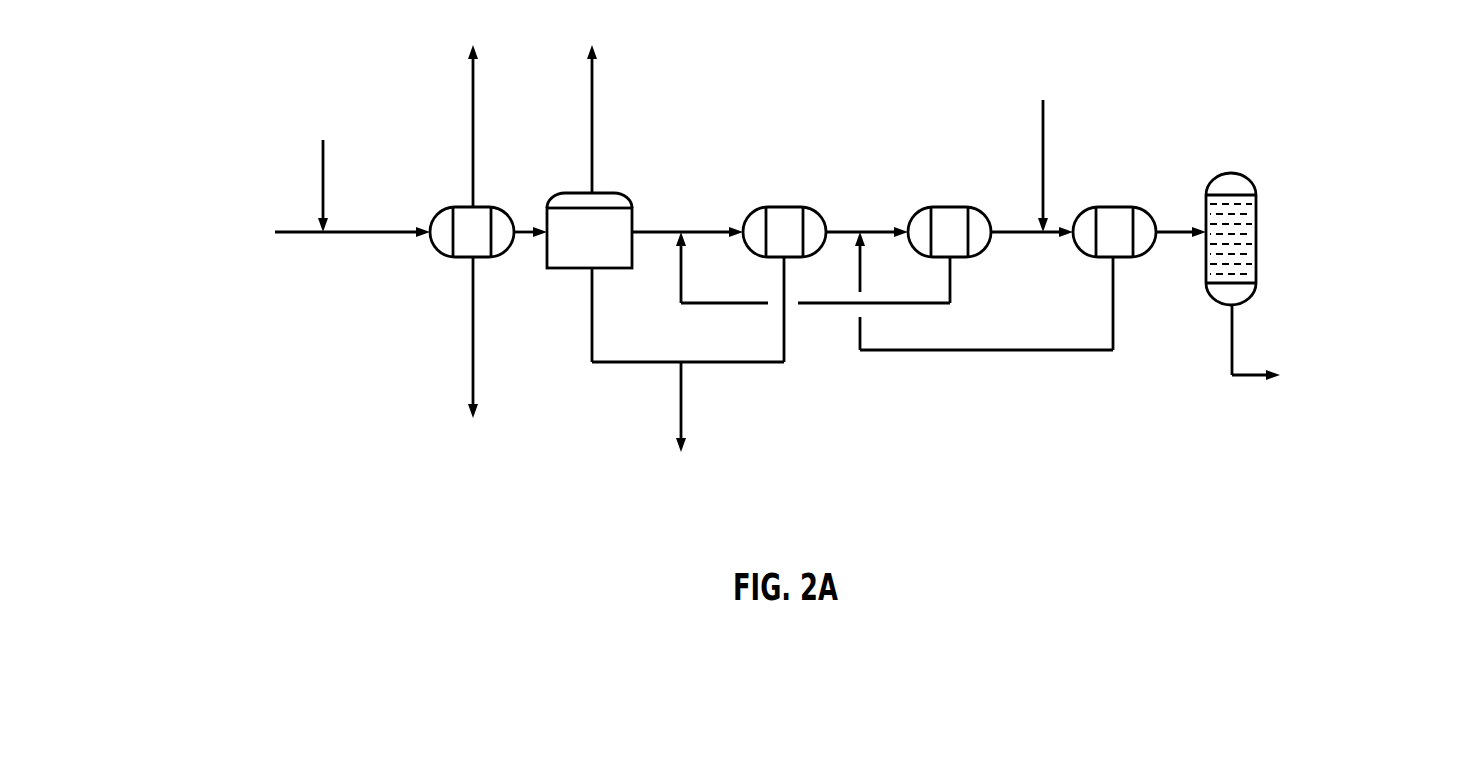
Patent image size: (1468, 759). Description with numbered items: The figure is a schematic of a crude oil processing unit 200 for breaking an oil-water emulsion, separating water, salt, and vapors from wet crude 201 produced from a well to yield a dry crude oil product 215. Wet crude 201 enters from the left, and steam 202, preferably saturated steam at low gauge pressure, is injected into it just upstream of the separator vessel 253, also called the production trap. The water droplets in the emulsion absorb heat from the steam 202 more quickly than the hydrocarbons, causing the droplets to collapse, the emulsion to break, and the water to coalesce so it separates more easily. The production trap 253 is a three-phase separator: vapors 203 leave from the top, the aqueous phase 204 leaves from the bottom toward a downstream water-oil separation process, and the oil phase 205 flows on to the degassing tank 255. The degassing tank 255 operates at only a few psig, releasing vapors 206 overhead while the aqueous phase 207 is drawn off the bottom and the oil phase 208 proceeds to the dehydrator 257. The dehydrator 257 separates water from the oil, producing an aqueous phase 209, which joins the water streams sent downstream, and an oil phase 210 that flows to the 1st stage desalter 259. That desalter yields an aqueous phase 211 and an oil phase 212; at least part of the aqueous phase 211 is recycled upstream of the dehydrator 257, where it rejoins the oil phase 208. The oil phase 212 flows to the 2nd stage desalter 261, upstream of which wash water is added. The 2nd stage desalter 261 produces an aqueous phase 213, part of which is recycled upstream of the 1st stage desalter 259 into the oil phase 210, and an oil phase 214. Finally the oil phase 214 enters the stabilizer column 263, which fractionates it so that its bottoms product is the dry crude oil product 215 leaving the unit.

The crude oil processing unit 200 is at (1342, 108).
The wet crude 201 is at (297, 233).
The steam 202 is at (323, 187).
The vapors 203 is at (473, 98).
The aqueous phase 204 is at (473, 333).
The oil phase 205 is at (523, 233).
The vapors 206 is at (592, 100).
The aqueous phase 207 is at (610, 362).
The oil phase 208 is at (657, 230).
The aqueous phase 209 is at (707, 362).
The oil phase 210 is at (843, 230).
The aqueous phase 211 is at (950, 275).
The oil phase 212 is at (1012, 230).
The aqueous phase 213 is at (1113, 275).
The oil phase 214 is at (1175, 230).
The dry crude oil product 215 is at (1232, 352).
The separator vessel 253 is at (462, 207).
The degassing tank 255 is at (570, 193).
The dehydrator 257 is at (783, 207).
The 1st stage desalter 259 is at (945, 207).
The 2nd stage desalter 261 is at (1110, 207).
The stabilizer column 263 is at (1233, 173).